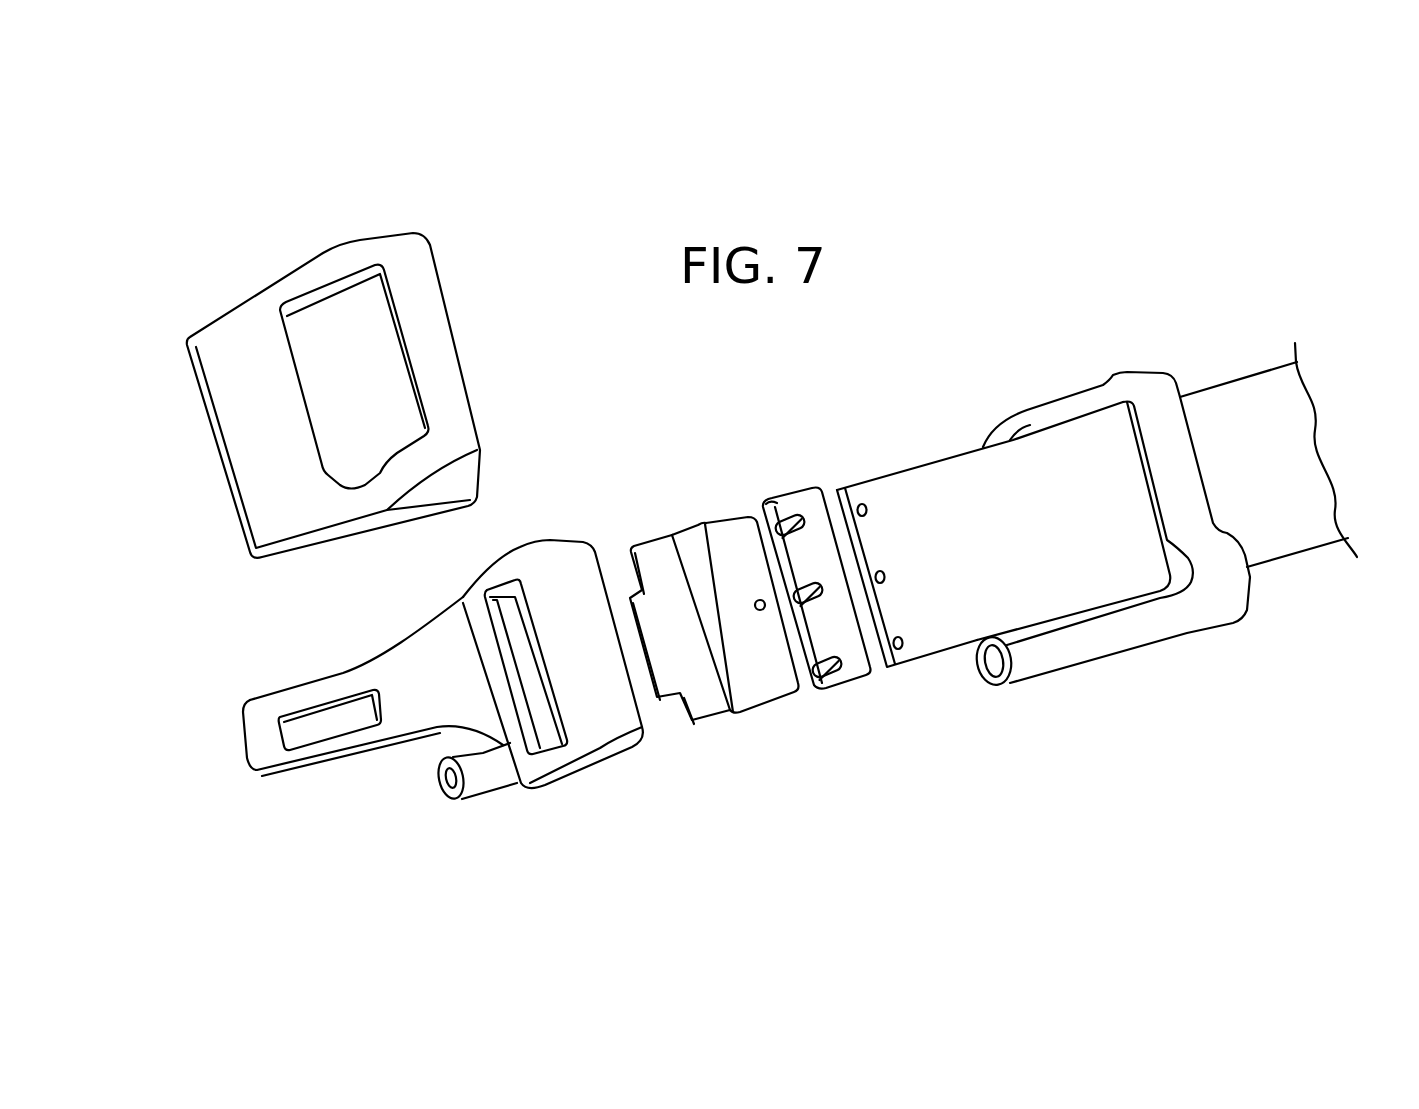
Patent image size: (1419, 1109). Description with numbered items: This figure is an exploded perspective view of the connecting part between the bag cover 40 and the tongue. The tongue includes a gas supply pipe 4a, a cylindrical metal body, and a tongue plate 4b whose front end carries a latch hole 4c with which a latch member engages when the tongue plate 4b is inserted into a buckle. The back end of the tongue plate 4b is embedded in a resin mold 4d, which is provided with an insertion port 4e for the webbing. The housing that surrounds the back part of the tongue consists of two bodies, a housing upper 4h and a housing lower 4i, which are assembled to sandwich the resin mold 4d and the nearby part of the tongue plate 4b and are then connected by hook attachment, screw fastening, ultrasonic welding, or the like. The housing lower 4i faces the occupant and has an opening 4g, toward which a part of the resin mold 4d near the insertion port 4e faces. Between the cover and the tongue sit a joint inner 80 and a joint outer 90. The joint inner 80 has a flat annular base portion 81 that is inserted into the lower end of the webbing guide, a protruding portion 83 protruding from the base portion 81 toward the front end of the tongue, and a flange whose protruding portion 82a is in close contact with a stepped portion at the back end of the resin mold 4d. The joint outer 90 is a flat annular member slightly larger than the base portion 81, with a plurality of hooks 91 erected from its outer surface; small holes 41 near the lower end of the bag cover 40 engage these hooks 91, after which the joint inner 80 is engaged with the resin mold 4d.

The housing lower 4i is at (253, 345).
The opening 4g is at (310, 400).
The tongue plate 4b is at (363, 670).
The latch hole 4c is at (330, 720).
The resin mold 4d is at (600, 717).
The insertion port 4e is at (531, 677).
The gas supply pipe 4a is at (483, 780).
The housing upper 4h is at (1030, 410).
The bag cover 40 is at (1097, 490).
The small holes 41 is at (870, 511).
The joint inner 80 is at (714, 623).
The base portion 81 is at (723, 530).
The protruding portion of the flange portion 82a is at (715, 600).
The protruding portion 83 is at (657, 550).
The joint outer 90 is at (817, 592).
The hooks 91 is at (790, 520).